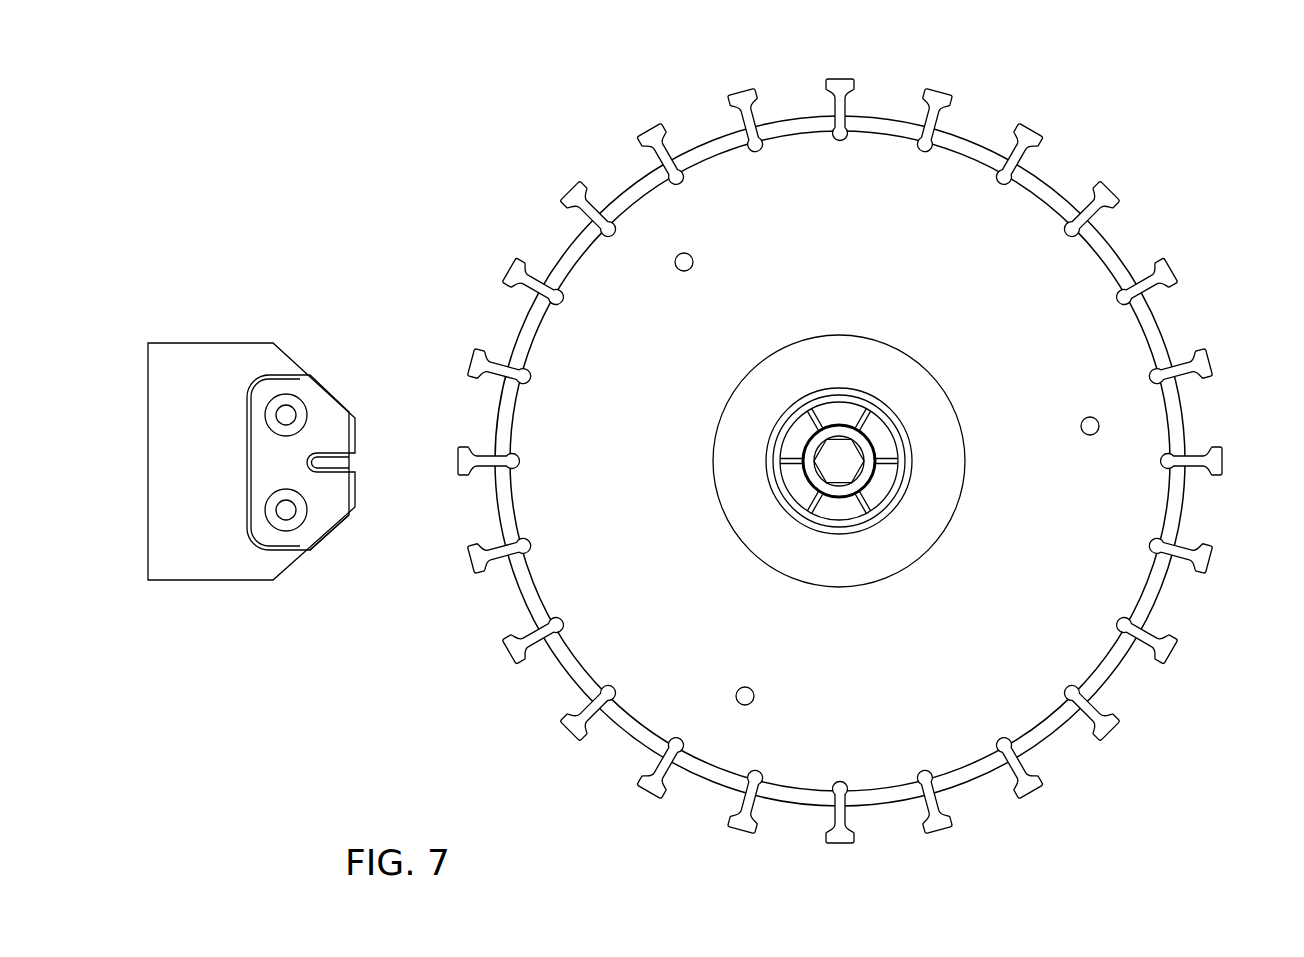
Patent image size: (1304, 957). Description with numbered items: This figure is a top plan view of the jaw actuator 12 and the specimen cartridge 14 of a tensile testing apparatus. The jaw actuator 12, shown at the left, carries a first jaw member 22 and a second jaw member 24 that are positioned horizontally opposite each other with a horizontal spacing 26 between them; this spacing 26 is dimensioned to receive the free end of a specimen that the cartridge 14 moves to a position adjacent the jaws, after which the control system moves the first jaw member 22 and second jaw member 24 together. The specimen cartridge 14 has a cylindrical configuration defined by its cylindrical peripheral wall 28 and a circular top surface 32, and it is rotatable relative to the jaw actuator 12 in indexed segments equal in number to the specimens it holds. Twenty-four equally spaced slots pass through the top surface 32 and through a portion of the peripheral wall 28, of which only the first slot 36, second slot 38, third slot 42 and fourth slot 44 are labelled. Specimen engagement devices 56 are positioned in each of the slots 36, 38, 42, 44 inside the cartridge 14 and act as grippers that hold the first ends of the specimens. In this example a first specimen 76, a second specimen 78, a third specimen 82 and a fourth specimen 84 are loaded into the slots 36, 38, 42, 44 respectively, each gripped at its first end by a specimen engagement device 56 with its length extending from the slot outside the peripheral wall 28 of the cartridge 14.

The jaw actuator 12 is at (294, 434).
The first jaw member 22 is at (353, 405).
The second jaw member 24 is at (348, 510).
The horizontal spacing 26 is at (362, 462).
The specimen cartridge 14 is at (843, 461).
The cylindrical peripheral wall 28 is at (1100, 665).
The circular top surface 32 is at (1020, 225).
The first slot 36 is at (457, 458).
The second slot 38 is at (846, 83).
The third slot 42 is at (1227, 439).
The fourth slot 44 is at (815, 843).
The specimen engagement devices 56 is at (832, 118).
The first specimen 76 is at (470, 447).
The second specimen 78 is at (837, 88).
The third specimen 82 is at (1222, 462).
The fourth specimen 84 is at (839, 845).